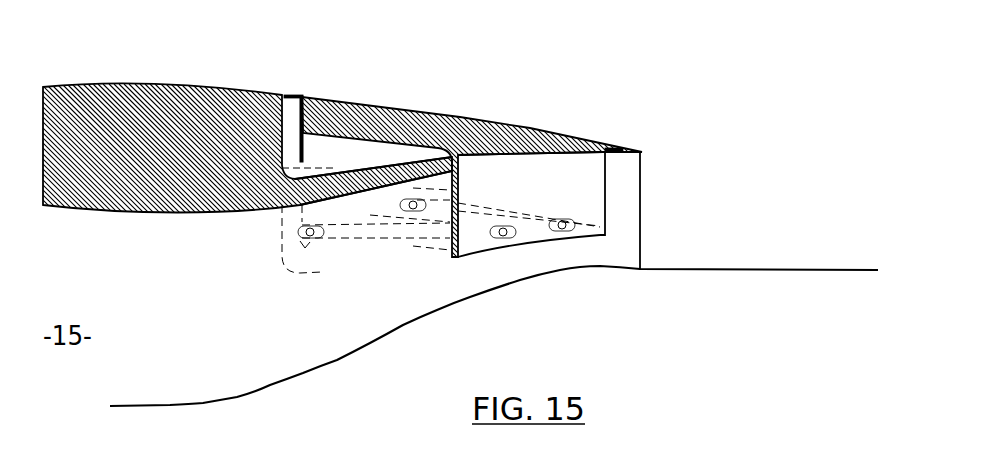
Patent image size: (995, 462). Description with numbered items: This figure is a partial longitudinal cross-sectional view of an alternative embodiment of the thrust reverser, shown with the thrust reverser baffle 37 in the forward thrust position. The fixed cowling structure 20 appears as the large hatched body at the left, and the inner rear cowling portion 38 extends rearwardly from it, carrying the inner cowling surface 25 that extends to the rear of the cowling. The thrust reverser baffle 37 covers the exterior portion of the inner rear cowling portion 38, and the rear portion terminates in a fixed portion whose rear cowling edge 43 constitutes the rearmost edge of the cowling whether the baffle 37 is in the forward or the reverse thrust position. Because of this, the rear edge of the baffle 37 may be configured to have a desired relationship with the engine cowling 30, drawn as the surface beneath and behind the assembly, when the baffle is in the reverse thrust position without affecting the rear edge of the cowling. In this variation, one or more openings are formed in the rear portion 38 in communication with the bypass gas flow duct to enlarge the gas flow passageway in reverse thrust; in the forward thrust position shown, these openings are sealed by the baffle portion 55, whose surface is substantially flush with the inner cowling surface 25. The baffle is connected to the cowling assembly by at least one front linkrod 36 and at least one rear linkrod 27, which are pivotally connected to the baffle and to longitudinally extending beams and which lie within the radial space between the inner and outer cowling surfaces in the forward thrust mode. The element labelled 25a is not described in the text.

The fixed cowling structure 20 is at (108, 133).
The thrust reverser baffle 37 is at (367, 115).
The inner rear cowling portion 38 is at (320, 188).
The baffle portion 55 is at (538, 162).
The seal lip wall 25a is at (627, 162).
The rear cowling edge 43 is at (672, 151).
The engine cowling 30 is at (770, 290).
The rear linkrod 27 is at (533, 223).
The front linkrod 36 is at (350, 233).
The inner cowling surface 25 is at (364, 210).